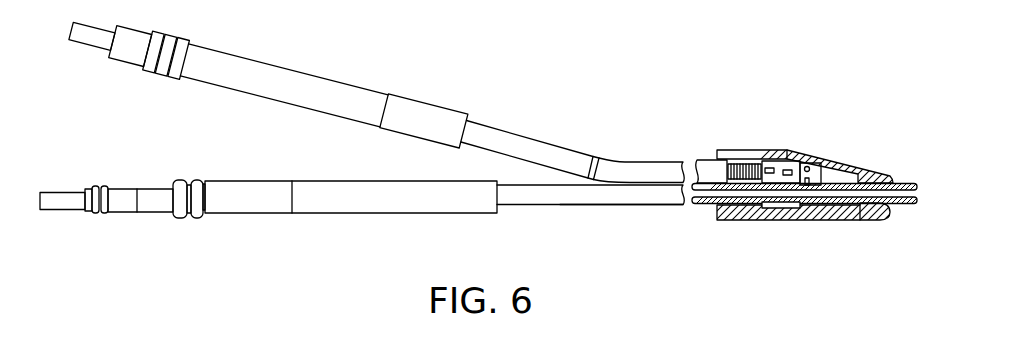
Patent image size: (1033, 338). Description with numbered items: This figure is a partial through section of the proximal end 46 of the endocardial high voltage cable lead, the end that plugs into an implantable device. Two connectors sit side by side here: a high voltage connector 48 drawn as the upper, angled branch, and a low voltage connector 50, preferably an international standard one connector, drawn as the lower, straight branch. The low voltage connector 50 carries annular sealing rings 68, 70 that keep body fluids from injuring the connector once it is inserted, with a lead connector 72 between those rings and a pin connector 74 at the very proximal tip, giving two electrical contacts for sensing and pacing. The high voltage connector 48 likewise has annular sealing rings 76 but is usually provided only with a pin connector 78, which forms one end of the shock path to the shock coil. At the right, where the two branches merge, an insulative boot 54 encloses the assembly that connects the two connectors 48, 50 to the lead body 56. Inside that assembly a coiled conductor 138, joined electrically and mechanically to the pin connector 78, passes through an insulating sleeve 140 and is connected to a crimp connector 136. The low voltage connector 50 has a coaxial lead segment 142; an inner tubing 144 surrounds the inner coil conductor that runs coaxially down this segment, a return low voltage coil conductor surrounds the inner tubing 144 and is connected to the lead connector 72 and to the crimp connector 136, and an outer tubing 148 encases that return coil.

The proximal end 46 is at (482, 72).
The high voltage connector 48 is at (264, 63).
The low voltage connector 50 is at (272, 181).
The insulative boot 54 is at (818, 157).
The lead body 56 is at (905, 182).
The annular sealing ring 68 is at (181, 179).
The annular sealing ring 70 is at (91, 184).
The lead connector 72 is at (152, 212).
The pin connector 74 is at (62, 210).
The annular sealing rings 76 is at (168, 38).
The pin connector 78 is at (92, 47).
The crimp connector 136 is at (780, 165).
The coiled conductor 138 is at (740, 162).
The insulating sleeve 140 is at (700, 159).
The coaxial lead segment 142 is at (518, 205).
The inner tubing 144 is at (772, 208).
The outer tubing 148 is at (608, 205).